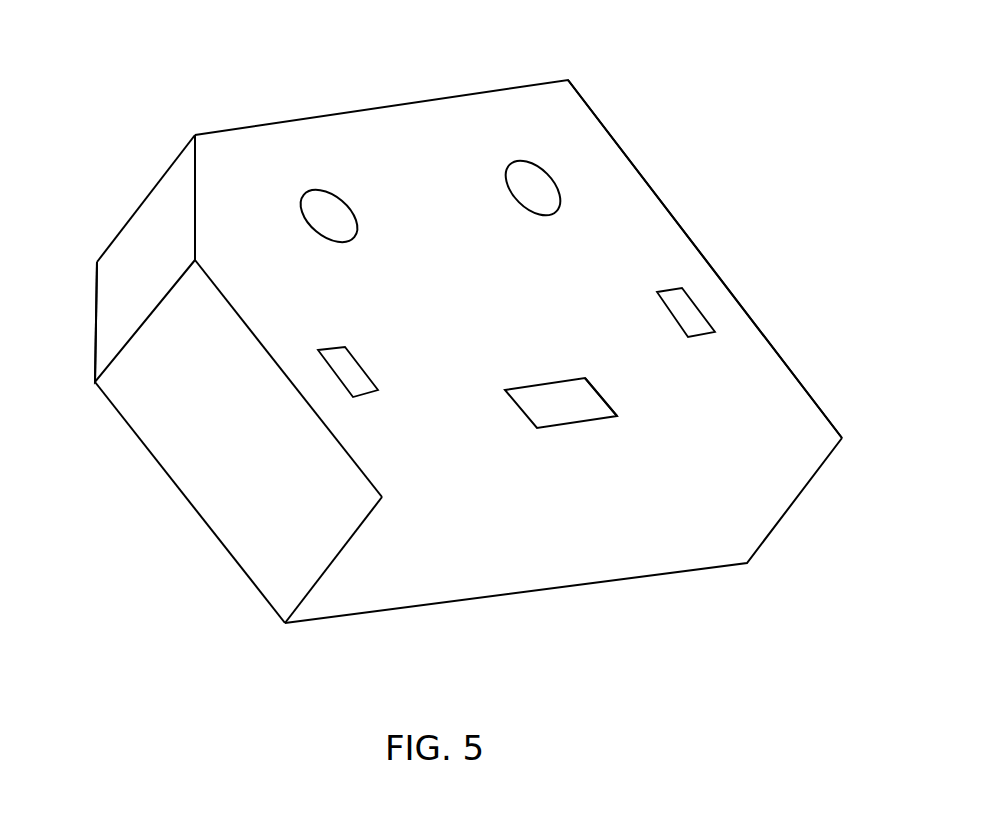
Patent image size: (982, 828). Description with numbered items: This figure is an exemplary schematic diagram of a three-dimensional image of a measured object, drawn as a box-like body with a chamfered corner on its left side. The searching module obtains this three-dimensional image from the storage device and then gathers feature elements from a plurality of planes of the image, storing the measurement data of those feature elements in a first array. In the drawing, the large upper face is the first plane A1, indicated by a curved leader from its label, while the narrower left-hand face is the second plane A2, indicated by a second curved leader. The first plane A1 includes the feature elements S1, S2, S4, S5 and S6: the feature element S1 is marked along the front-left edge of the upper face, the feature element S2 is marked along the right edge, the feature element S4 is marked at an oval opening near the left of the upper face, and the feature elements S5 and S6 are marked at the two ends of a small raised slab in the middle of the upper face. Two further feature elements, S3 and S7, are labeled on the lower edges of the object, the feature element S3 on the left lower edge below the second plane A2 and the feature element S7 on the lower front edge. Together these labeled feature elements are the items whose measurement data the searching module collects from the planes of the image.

The first plane A1 is at (458, 127).
The second plane A2 is at (163, 380).
The feature element S1 is at (288, 378).
The feature element S2 is at (705, 259).
The feature element S3 is at (190, 502).
The feature element S4 is at (328, 215).
The feature element S5 is at (558, 403).
The feature element S6 is at (598, 397).
The feature element S7 is at (333, 560).